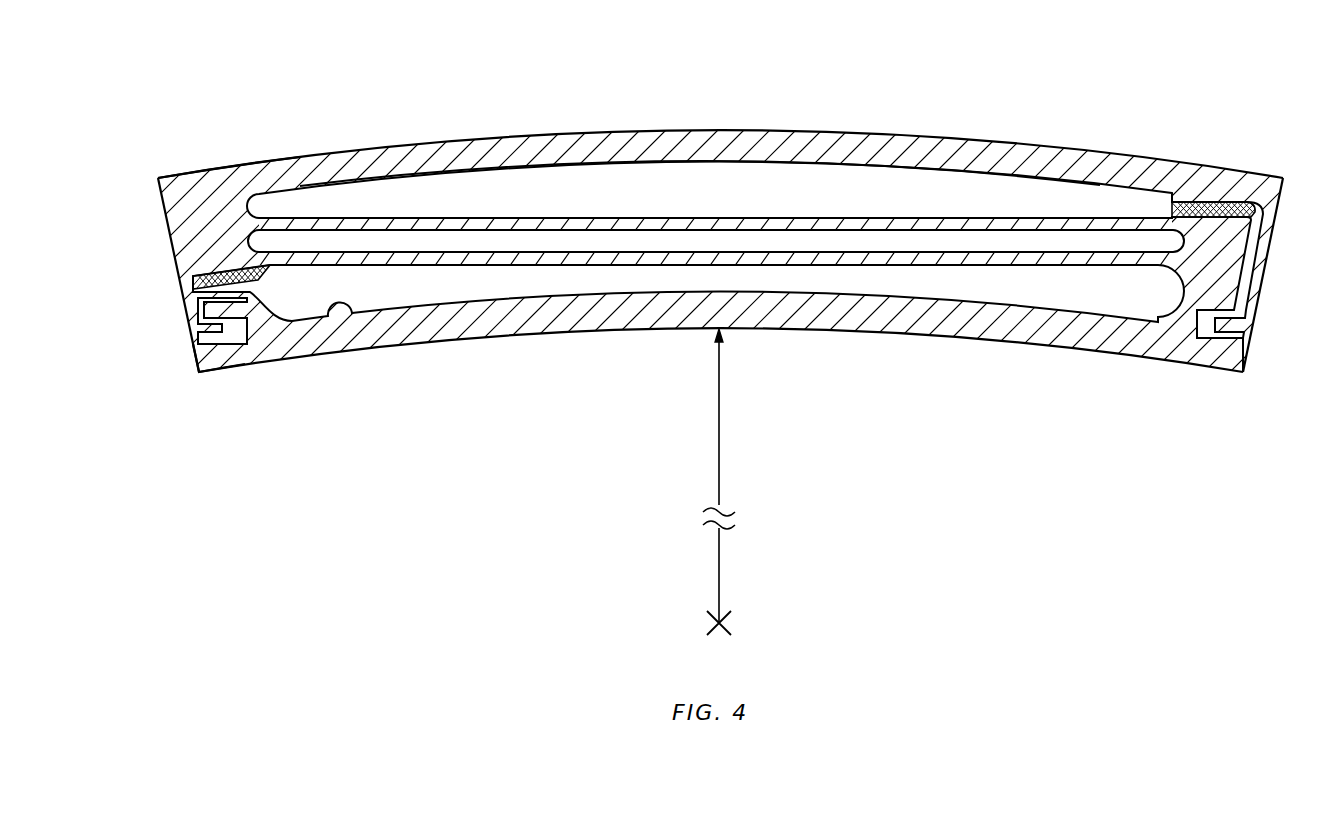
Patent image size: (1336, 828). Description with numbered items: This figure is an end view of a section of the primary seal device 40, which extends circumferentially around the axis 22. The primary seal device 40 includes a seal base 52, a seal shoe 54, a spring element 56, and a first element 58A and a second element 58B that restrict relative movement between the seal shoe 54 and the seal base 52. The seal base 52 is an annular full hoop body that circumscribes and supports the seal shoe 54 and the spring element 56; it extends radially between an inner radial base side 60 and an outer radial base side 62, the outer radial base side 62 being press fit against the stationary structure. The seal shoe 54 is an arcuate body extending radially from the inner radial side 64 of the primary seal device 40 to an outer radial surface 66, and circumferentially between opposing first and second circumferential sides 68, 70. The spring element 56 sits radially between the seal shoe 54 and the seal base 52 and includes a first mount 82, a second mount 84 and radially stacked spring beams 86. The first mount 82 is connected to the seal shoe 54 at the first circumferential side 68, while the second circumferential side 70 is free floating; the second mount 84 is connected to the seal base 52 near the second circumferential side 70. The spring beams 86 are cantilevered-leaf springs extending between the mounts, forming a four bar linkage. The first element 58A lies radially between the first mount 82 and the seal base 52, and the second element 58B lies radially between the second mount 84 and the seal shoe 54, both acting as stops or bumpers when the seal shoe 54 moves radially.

The primary seal device 40 is at (1163, 91).
The seal base 52 is at (890, 134).
The seal shoes 54 is at (655, 330).
The spring elements 56 is at (748, 217).
The first element 58A is at (1208, 228).
The second element 58B is at (253, 313).
The inner radial base side 60 is at (383, 180).
The outer radial base side 62 is at (202, 171).
The inner radial side 64 is at (218, 373).
The outer radial surface 66 is at (350, 324).
The first circumferential side 68 is at (1240, 370).
The second circumferential side 70 is at (196, 366).
The first mount 82 is at (1240, 262).
The second mount 84 is at (173, 246).
The spring beams 86 is at (826, 214).
The axis 22 is at (723, 627).